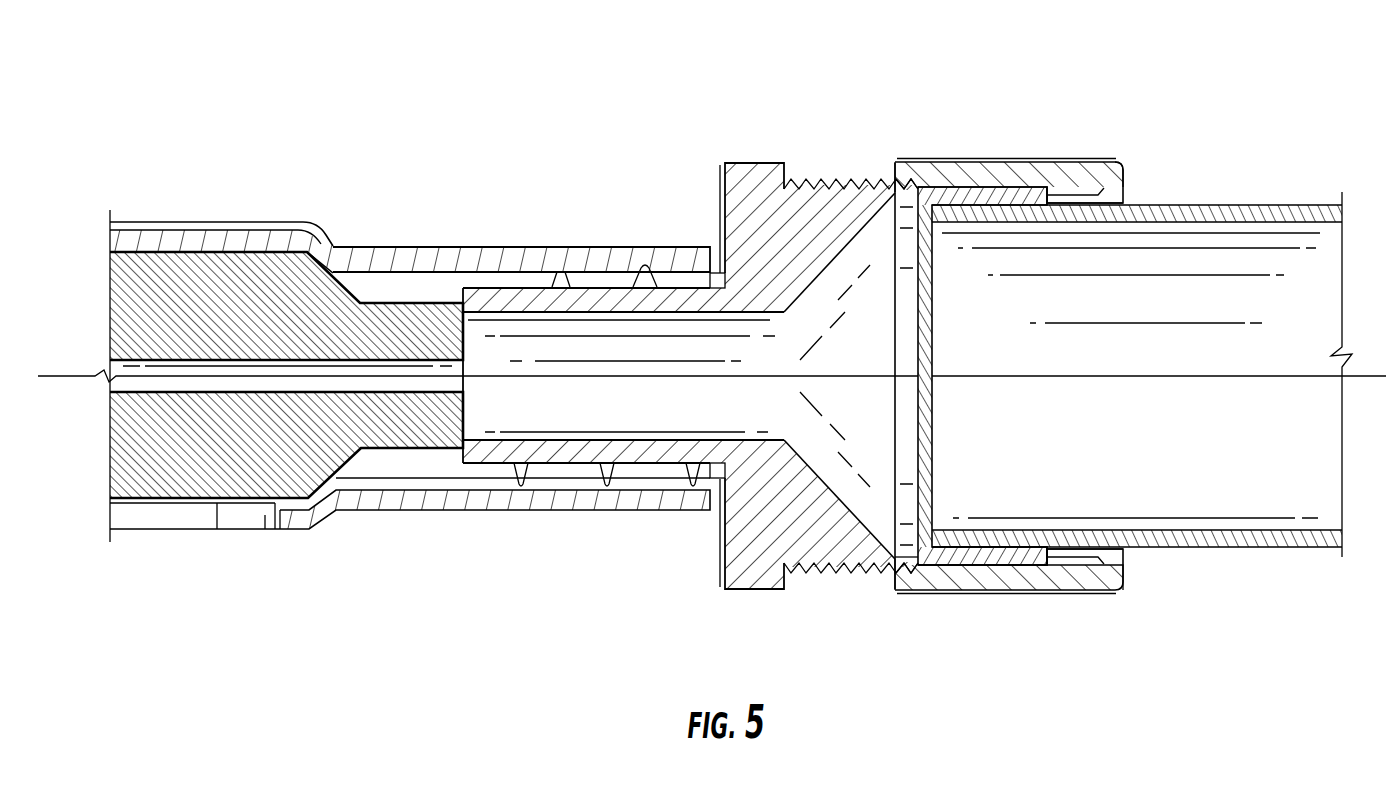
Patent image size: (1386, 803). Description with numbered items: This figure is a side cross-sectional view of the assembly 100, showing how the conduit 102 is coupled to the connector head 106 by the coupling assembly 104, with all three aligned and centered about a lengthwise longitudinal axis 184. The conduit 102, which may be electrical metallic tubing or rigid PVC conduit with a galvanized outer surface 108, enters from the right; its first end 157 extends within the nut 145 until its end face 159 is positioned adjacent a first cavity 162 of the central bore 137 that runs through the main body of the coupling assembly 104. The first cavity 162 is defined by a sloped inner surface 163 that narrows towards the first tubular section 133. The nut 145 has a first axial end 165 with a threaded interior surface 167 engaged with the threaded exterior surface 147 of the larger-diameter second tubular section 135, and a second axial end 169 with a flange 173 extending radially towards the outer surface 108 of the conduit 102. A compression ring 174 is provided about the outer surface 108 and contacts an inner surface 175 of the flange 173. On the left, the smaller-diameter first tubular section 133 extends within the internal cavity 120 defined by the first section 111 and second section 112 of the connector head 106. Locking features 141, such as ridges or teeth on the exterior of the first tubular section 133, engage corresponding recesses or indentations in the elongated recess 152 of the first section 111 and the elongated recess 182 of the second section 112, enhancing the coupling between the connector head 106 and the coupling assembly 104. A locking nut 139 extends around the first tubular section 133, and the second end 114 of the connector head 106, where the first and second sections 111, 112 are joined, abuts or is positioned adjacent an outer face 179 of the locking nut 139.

The assembly 100 is at (691, 56).
The conduit 102 is at (1142, 372).
The coupling assembly 104 is at (690, 350).
The connector head 106 is at (271, 204).
The outer surface 108 is at (1258, 549).
The first section 111 is at (366, 260).
The second section 112 is at (347, 504).
The second end 114 is at (698, 502).
The internal cavity 120 is at (409, 320).
The first tubular section 133 is at (521, 296).
The second tubular section 135 is at (832, 540).
The central bore 137 is at (704, 345).
The locking nut 139 is at (757, 577).
The locking features 141 is at (521, 478).
The nut 145 is at (1041, 359).
The threaded exterior surface 147 is at (873, 568).
The elongated recess 152 is at (446, 288).
The first end 157 is at (974, 548).
The end face 159 is at (920, 562).
The first cavity 162 is at (877, 238).
The sloped inner surface 163 is at (822, 482).
The first axial end 165 is at (908, 168).
The threaded interior surface 167 is at (903, 192).
The second axial end 169 is at (1118, 163).
The flange 173 is at (1113, 563).
The compression ring 174 is at (1080, 560).
The inner surface 175 is at (1105, 193).
The outer face 179 is at (718, 203).
The elongated recess 182 is at (445, 466).
The longitudinal axis 184 is at (1188, 373).